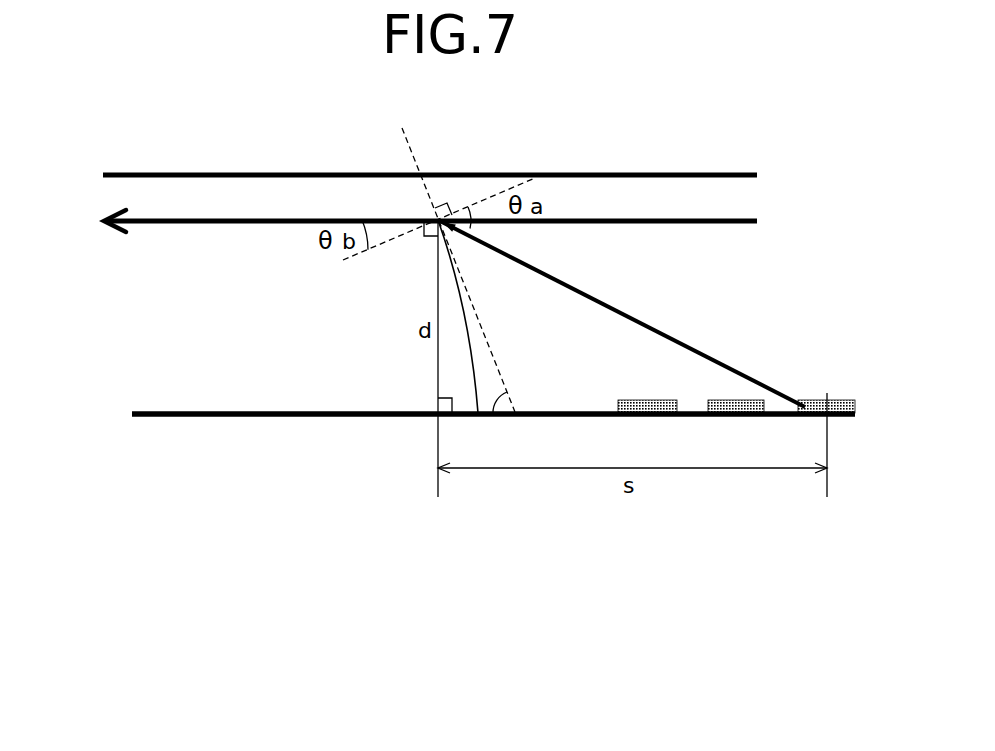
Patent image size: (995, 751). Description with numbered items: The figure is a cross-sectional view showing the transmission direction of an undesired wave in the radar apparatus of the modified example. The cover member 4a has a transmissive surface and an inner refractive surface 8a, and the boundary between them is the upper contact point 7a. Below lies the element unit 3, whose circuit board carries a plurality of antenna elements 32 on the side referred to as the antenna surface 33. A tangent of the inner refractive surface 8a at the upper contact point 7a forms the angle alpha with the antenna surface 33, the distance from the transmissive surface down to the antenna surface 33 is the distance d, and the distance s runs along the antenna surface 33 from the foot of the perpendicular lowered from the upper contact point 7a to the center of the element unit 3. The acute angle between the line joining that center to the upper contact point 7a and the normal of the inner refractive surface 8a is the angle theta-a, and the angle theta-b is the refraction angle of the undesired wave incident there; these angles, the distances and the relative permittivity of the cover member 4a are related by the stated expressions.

The upper contact point 7a is at (443, 207).
The cover member 4a is at (198, 362).
The inner refractive surface 8a is at (477, 376).
The antenna surface 33 is at (313, 414).
The element unit 3 is at (590, 414).
The antenna elements 32 is at (827, 455).